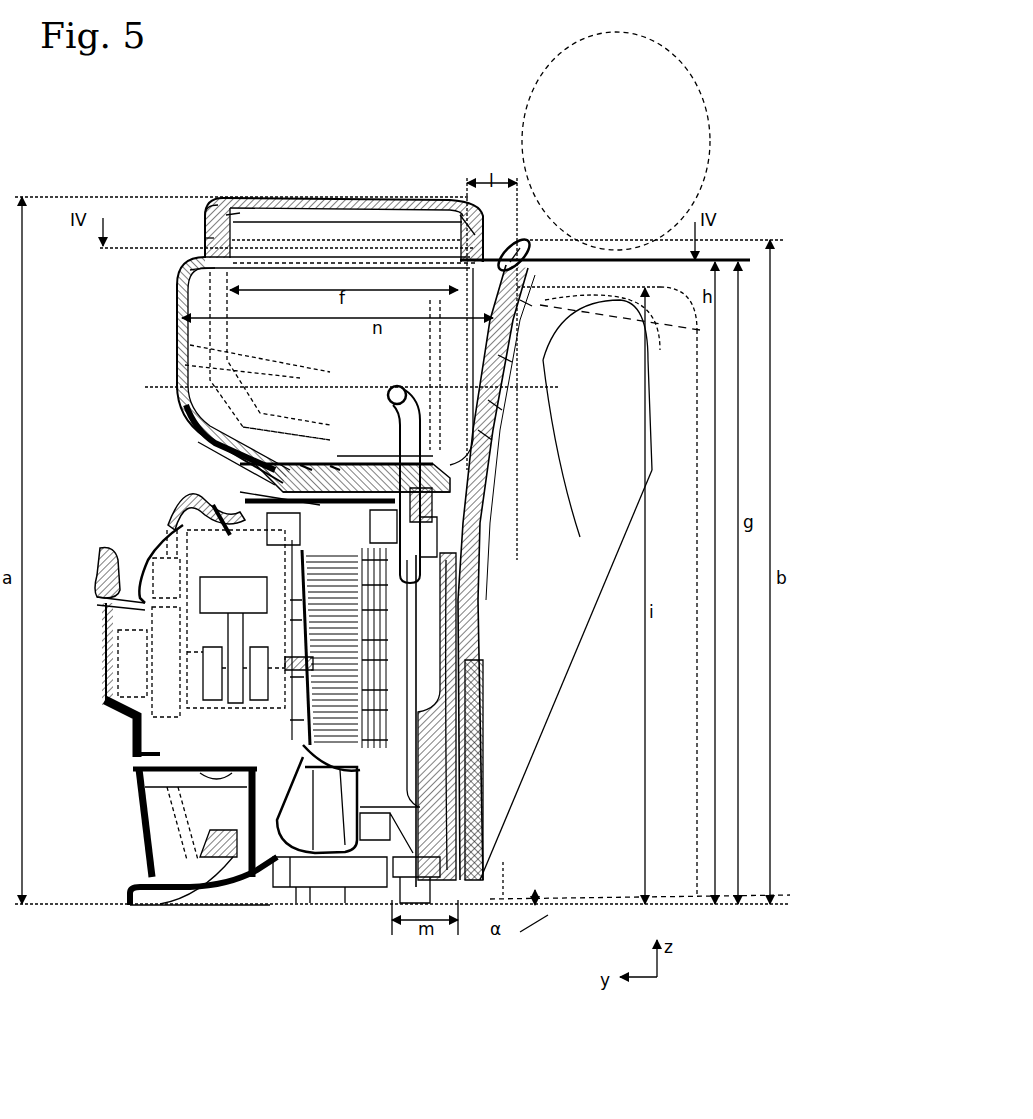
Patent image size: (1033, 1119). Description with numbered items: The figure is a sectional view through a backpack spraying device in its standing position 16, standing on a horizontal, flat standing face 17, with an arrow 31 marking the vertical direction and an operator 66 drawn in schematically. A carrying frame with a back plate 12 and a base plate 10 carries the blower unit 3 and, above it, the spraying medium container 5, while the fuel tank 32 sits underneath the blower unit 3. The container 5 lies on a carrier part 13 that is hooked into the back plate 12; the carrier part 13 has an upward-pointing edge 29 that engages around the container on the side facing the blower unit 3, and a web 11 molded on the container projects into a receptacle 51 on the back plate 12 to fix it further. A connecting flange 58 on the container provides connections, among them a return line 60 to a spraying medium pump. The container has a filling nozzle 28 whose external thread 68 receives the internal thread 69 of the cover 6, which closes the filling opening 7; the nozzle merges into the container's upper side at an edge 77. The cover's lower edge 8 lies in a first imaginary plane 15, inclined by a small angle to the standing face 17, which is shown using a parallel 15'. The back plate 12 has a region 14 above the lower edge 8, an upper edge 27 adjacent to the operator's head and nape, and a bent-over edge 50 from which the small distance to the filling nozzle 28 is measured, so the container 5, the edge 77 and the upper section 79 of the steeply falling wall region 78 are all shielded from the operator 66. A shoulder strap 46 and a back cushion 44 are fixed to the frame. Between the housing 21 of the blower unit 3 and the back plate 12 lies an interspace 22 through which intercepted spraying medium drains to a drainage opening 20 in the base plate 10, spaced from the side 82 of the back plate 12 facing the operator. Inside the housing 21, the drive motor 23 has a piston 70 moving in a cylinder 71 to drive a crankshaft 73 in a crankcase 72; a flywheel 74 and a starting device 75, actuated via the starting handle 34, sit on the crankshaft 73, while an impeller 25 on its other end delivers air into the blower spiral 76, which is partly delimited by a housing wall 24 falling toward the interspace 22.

The blower unit 3 is at (107, 759).
The spraying medium container 5 is at (180, 355).
The cover 6 is at (388, 199).
The filling opening 7 is at (352, 221).
The lower edge 8 is at (195, 266).
The base plate 10 is at (183, 887).
The web 11 is at (502, 410).
The back plate 12 is at (478, 732).
The carrier part 13 is at (228, 463).
The region 14 is at (550, 250).
The first imaginary plane 15 is at (296, 265).
The parallel 15' is at (511, 867).
The standing position 16 is at (471, 90).
The standing face 17 is at (565, 902).
The drainage opening 20 is at (336, 877).
The housing 21 is at (152, 536).
The interspace 22 is at (415, 643).
The drive motor 23 is at (274, 763).
The housing wall 24 is at (333, 470).
The impeller 25 is at (350, 873).
The upper edge 27 is at (518, 245).
The filling nozzle 28 is at (206, 240).
The edge 29 is at (200, 433).
The arrow 31 is at (190, 100).
The fuel tank 32 is at (150, 861).
The starting handle 34 is at (98, 575).
The back cushion 44 is at (485, 808).
The shoulder strap 46 is at (611, 617).
The edge 50 is at (514, 240).
The receptacle 51 is at (492, 430).
The connecting flange 58 is at (305, 470).
The return line 60 is at (480, 521).
The operator 66 is at (667, 46).
The external thread 68 is at (243, 213).
The internal thread 69 is at (225, 212).
The piston 70 is at (213, 518).
The cylinder 71 is at (98, 552).
The crankcase 72 is at (148, 800).
The crankshaft 73 is at (195, 663).
The flywheel 74 is at (163, 675).
The starting device 75 is at (128, 652).
The blower spiral 76 is at (303, 848).
The edge 77 is at (468, 231).
The region 78 is at (515, 361).
The upper section 79 is at (530, 298).
The side 82 is at (476, 592).